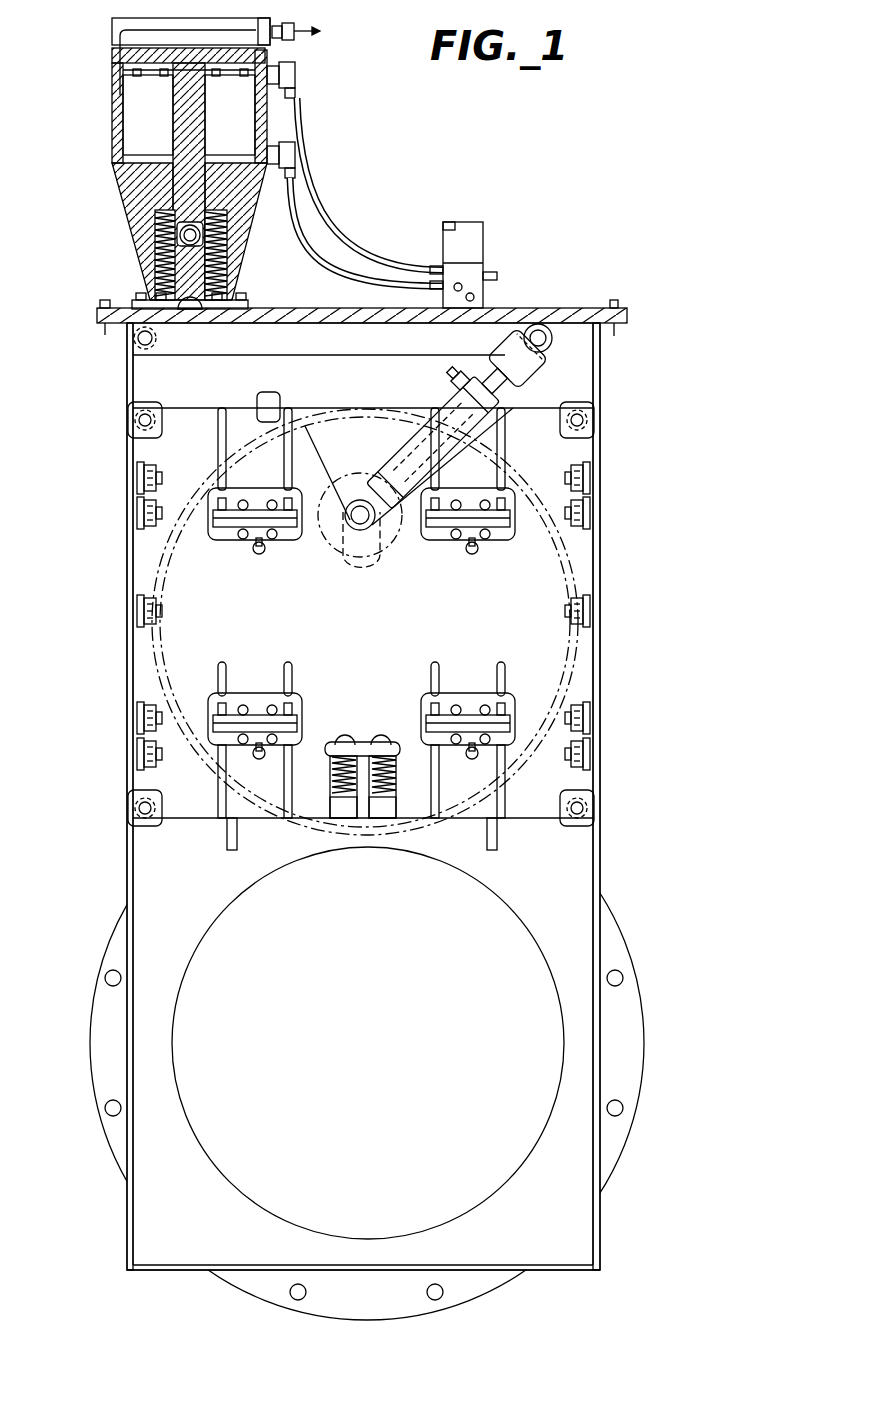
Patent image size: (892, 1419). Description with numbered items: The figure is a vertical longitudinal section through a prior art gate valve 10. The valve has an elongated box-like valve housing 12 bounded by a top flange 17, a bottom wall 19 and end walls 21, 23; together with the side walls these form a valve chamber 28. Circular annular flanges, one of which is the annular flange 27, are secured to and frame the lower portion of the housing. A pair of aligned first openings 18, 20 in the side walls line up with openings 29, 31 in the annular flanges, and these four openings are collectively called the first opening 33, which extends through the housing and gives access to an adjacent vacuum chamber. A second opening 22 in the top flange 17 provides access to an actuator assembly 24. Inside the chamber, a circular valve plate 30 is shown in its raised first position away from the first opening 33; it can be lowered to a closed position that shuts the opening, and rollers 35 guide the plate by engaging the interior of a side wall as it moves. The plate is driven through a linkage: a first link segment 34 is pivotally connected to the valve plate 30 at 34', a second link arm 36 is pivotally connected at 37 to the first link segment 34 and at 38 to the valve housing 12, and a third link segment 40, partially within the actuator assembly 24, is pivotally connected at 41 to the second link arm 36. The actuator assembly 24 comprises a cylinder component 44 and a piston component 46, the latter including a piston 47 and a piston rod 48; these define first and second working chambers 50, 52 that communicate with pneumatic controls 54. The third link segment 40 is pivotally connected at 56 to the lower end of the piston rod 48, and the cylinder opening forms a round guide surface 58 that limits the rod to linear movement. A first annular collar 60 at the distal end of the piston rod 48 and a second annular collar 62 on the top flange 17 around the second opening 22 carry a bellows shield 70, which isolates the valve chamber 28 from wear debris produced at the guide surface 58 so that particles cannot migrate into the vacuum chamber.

The gate valve 10 is at (583, 256).
The valve housing 12 is at (604, 401).
The top flange 17 is at (513, 309).
The first opening 18 is at (475, 1043).
The bottom wall 19 is at (540, 1282).
The first opening 20 is at (368, 1043).
The end wall 21 is at (602, 834).
The second opening 22 is at (198, 322).
The end wall 23 is at (128, 864).
The actuator assembly 24 is at (322, 106).
The annular flange 27 is at (626, 966).
The valve chamber 28 is at (596, 862).
The opening 29 is at (368, 1043).
The valve plate 30 is at (583, 580).
The opening 31 is at (505, 1167).
The first opening 33 is at (492, 938).
The first link segment 34 is at (361, 629).
The pivotal connection 34' is at (396, 499).
The rollers 35 is at (135, 428).
The second link arm 36 is at (322, 350).
The pivotal connection 37 is at (557, 340).
The pivotal connection 38 is at (138, 345).
The third link segment 40 is at (192, 274).
The pivotal connection 41 is at (228, 302).
The cylinder component 44 is at (118, 216).
The piston component 46 is at (165, 108).
The piston 47 is at (118, 94).
The piston rod 48 is at (125, 155).
The first working chamber 50 is at (270, 54).
The second working chamber 52 is at (252, 122).
The pneumatic controls 54 is at (356, 228).
The pivotal connection 56 is at (166, 236).
The guide surface 58 is at (180, 182).
The first annular collar 60 is at (296, 183).
The second annular collar 62 is at (150, 299).
The bellows shield 70 is at (202, 236).